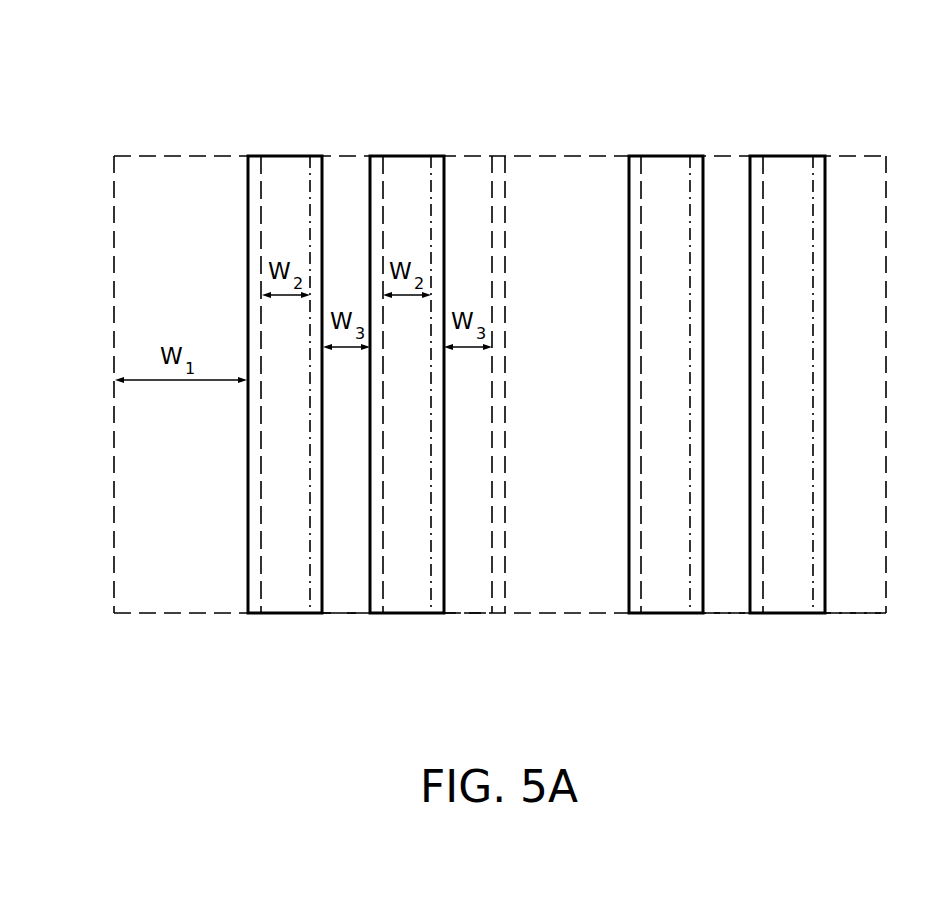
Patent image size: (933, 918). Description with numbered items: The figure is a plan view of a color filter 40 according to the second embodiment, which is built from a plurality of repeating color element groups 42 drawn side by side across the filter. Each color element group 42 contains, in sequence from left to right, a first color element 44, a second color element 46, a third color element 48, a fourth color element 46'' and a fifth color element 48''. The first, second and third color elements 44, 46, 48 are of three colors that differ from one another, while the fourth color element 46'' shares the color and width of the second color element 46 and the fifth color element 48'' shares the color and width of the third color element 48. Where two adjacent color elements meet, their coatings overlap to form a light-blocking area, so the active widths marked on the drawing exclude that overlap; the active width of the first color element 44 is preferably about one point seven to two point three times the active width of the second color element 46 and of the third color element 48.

The color filter 40 is at (856, 60).
The color element group 42 is at (886, 128).
The first color element 44 is at (189, 601).
The second color element 46 is at (475, 429).
The third color element 48 is at (536, 652).
The fourth color element 46'' is at (597, 429).
The fifth color element 48'' is at (665, 429).